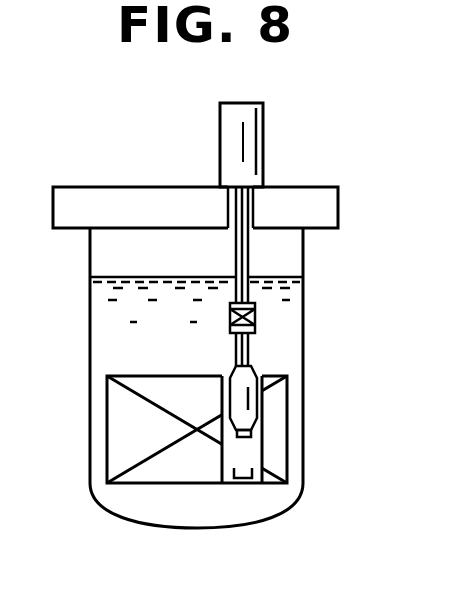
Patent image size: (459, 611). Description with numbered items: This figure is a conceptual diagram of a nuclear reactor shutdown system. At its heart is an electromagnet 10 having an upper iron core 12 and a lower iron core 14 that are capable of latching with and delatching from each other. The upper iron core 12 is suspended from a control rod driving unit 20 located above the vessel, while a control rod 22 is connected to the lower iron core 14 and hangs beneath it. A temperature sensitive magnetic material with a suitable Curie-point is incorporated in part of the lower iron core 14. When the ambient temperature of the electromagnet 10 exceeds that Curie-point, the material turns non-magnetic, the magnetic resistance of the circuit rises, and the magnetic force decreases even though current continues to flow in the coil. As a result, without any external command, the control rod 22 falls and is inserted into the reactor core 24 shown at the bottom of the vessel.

The electromagnet 10 is at (297, 326).
The upper iron core 12 is at (256, 307).
The lower iron core 14 is at (248, 328).
The control rod driving unit 20 is at (264, 126).
The control rod 22 is at (250, 400).
The reactor core 24 is at (150, 472).